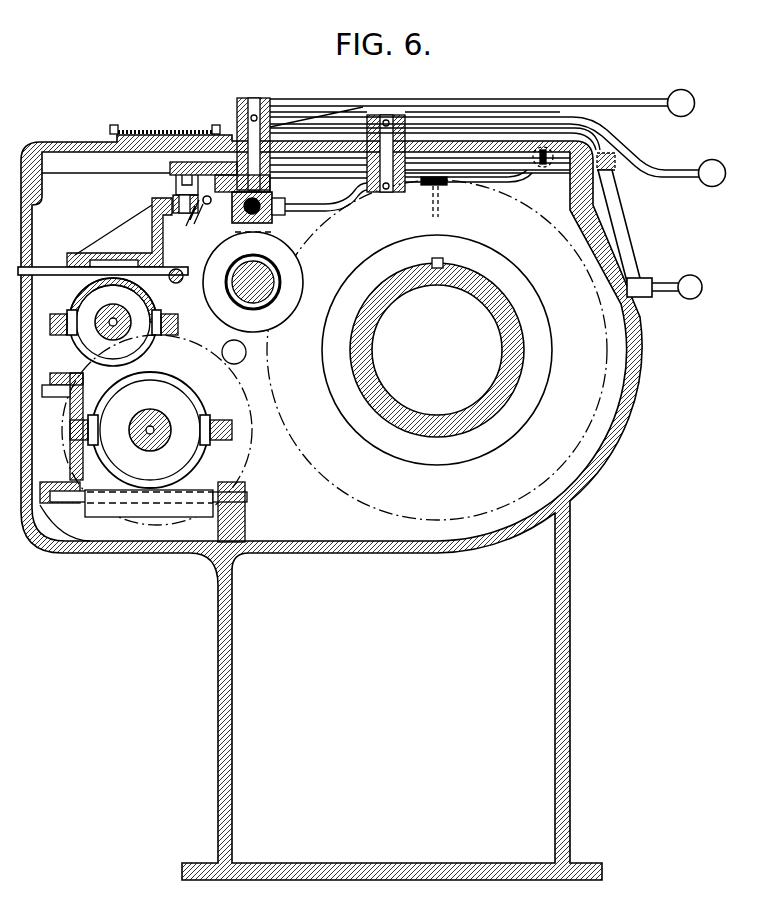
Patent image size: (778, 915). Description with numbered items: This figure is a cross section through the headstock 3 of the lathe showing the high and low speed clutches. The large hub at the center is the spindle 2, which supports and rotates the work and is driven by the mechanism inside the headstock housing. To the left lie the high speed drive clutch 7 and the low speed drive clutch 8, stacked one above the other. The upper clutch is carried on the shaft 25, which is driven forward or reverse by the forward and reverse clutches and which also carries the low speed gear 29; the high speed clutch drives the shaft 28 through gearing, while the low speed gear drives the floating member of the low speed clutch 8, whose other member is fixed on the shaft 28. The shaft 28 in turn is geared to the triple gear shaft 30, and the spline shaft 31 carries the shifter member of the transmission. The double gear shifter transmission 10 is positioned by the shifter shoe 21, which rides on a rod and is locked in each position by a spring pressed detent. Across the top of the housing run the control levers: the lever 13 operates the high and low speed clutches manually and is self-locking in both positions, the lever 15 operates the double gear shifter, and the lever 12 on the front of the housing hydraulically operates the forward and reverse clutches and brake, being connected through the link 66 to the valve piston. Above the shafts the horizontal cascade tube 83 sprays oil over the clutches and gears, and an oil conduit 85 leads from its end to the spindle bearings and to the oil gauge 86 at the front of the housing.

The spindle 2 is at (501, 359).
The headstock 3 is at (641, 374).
The high speed drive clutch 7 is at (137, 338).
The low speed drive clutch 8 is at (187, 403).
The double gear shifter transmission 10 is at (300, 290).
The lever 12 is at (642, 266).
The lever 13 is at (601, 98).
The lever 15 is at (676, 166).
The shifter shoe 21 is at (272, 222).
The shaft 25 is at (130, 313).
The shaft 28 is at (149, 407).
The low speed gear 29 is at (97, 307).
The triple gear shaft 30 is at (246, 348).
The spline shaft 31 is at (268, 280).
The link 66 is at (225, 196).
The cascade tube 83 is at (208, 192).
The oil conduit 85 is at (504, 183).
The oil gauge 86 is at (546, 166).